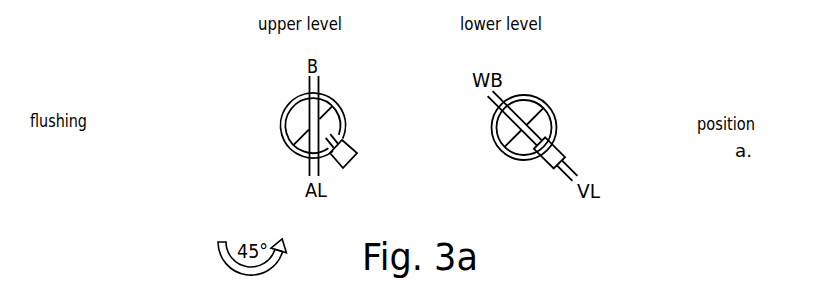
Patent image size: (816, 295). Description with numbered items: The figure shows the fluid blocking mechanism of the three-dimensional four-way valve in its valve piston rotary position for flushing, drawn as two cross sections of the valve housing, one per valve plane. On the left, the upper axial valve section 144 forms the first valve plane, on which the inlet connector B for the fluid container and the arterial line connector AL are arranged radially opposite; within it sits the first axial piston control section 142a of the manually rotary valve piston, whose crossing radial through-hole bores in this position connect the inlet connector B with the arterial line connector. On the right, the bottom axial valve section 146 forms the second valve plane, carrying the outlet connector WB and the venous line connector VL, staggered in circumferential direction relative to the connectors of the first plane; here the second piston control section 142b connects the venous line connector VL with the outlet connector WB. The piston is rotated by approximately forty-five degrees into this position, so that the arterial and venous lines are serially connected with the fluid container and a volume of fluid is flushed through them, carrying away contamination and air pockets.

The first axial piston control section 142a is at (300, 112).
The second piston control section 142b is at (546, 128).
The upper axial valve section 144 is at (276, 157).
The bottom axial valve section 146 is at (515, 164).